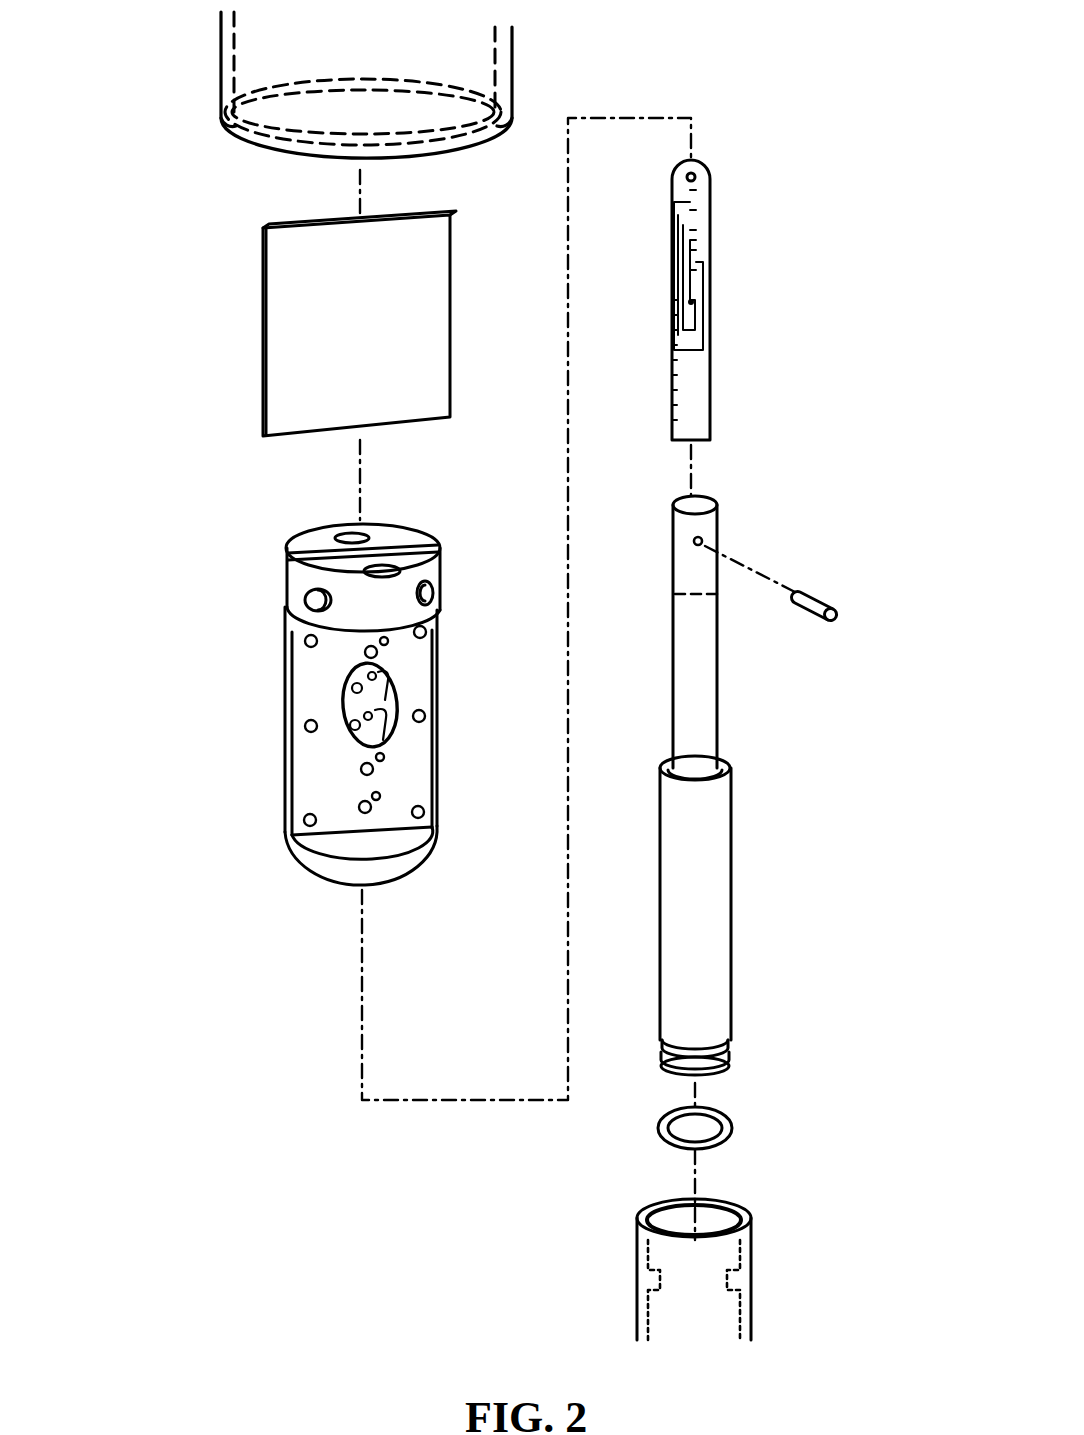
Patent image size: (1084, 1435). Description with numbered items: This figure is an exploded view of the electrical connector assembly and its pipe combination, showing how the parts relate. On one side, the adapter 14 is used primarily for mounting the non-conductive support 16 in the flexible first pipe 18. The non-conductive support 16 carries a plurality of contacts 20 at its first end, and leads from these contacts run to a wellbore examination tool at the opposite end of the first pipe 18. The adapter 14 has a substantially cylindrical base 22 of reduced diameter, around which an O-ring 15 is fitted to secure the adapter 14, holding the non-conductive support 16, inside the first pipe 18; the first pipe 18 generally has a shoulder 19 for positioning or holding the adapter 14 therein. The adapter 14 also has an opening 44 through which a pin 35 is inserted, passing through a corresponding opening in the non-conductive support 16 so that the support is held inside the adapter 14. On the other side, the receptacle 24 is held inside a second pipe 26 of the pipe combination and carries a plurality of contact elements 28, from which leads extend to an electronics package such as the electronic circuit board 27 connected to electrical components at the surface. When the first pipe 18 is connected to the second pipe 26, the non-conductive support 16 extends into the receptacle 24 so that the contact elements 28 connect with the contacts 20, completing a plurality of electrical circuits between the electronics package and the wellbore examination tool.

The adapter 14 is at (788, 774).
The O-ring 15 is at (740, 1126).
The non-conductive support 16 is at (763, 300).
The first pipe 18 is at (758, 1271).
The shoulder 19 is at (665, 1272).
The contacts 20 is at (697, 220).
The base 22 is at (730, 1053).
The receptacle 24 is at (345, 704).
The second pipe 26 is at (207, 94).
The electronic circuit board 27 is at (420, 283).
The contact elements 28 is at (385, 692).
The pin 35 is at (820, 590).
The opening 44 is at (702, 541).